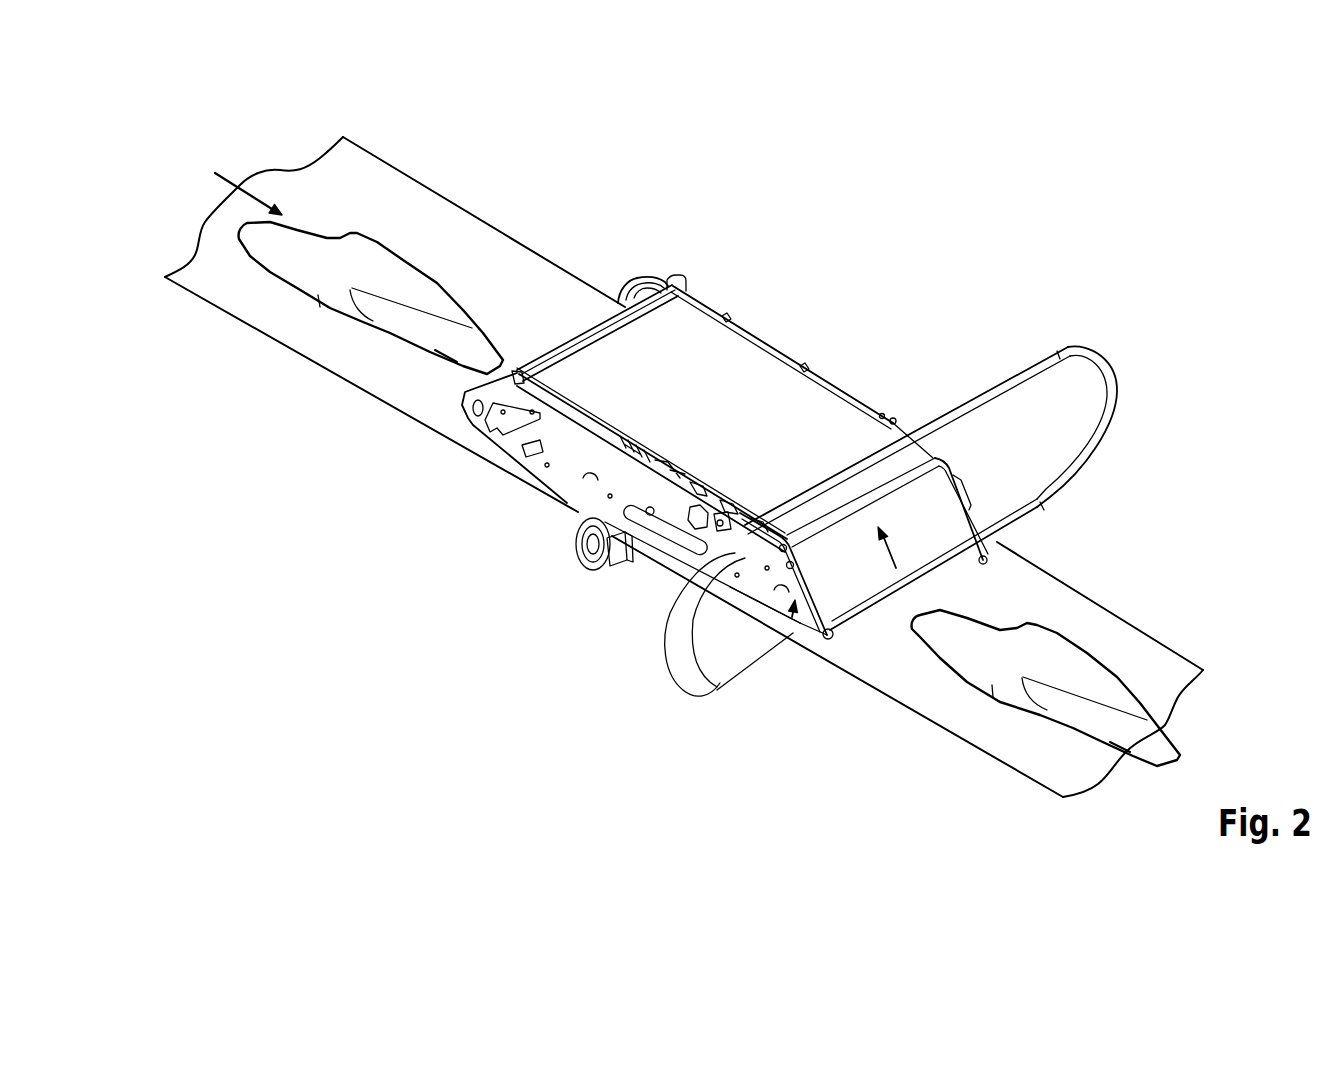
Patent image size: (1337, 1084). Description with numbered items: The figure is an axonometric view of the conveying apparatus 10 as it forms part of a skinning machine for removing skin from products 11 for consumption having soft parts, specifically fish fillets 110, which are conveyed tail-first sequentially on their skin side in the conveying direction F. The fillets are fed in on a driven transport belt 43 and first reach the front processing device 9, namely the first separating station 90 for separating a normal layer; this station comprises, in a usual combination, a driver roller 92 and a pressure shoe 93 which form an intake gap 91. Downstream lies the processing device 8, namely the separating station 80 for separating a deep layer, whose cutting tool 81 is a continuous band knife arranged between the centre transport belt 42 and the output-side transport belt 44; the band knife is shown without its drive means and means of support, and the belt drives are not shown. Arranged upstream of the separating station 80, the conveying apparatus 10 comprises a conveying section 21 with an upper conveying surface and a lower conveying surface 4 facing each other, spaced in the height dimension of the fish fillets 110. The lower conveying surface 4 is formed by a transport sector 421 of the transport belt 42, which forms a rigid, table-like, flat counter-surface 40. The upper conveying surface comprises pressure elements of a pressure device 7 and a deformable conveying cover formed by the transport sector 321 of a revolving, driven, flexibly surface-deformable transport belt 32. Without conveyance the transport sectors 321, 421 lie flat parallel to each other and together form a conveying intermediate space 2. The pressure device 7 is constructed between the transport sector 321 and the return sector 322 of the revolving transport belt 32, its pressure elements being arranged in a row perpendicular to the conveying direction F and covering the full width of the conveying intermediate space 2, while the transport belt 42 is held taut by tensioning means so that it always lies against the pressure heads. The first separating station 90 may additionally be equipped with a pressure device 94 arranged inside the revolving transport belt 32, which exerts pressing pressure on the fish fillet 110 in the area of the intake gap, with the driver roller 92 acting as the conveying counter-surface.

The conveying direction F is at (257, 192).
The conveying intermediate space 2 is at (723, 600).
The lower conveying surface 4 is at (772, 638).
The counter-surface 40 is at (778, 625).
The pressure device 7 is at (793, 632).
The processing device 8 is at (972, 450).
The separating station 80 is at (1135, 350).
The cutting tool 81 is at (1063, 343).
The front processing device 9 is at (571, 574).
The first separating station 90 is at (557, 527).
The intake gap 91 is at (567, 517).
The driver roller 92 is at (578, 548).
The pressure shoe 93 is at (612, 568).
The pressure device 94 is at (638, 440).
The conveying apparatus 10 is at (748, 628).
The products 11 is at (719, 446).
The fish fillets 110 is at (389, 253).
The conveying section 21 is at (763, 625).
The transport belt 32 is at (825, 403).
The transport sector 321 is at (660, 597).
The return sector 322 is at (760, 390).
The centre transport belt 42 is at (623, 574).
The transport sector 421 is at (658, 568).
The transport belt 43 is at (277, 328).
The output-side transport belt 44 is at (996, 747).